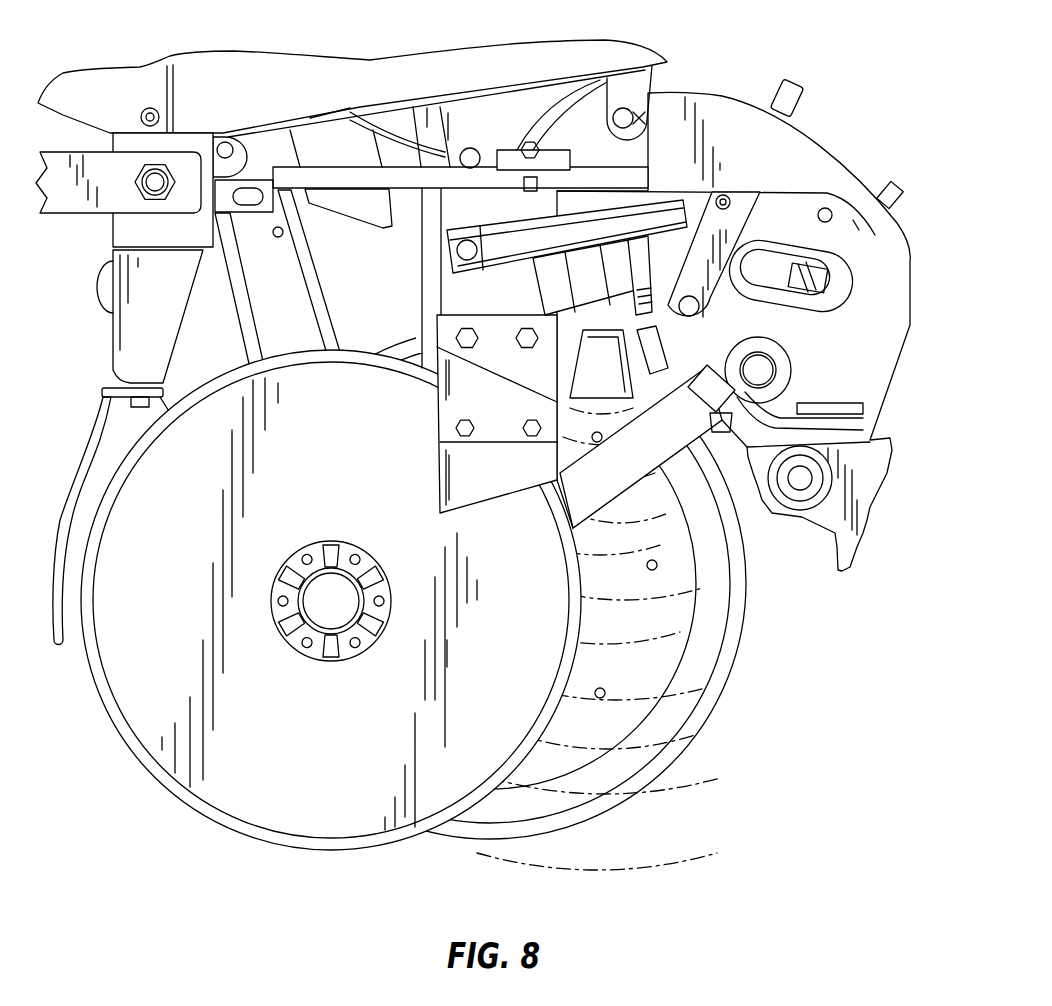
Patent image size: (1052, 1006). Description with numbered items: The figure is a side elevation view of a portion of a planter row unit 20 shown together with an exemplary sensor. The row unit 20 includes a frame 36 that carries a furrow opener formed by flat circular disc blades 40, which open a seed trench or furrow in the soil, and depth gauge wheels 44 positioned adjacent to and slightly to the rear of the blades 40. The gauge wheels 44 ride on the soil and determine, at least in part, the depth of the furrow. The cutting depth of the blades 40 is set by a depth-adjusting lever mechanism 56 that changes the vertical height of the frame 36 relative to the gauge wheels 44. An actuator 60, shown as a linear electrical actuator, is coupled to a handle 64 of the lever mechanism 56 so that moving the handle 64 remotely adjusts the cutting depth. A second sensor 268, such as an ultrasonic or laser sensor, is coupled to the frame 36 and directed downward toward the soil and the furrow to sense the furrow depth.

The planter row unit 20 is at (870, 93).
The frame 36 is at (903, 363).
The flat circular disc blades 40 is at (243, 785).
The depth gauge wheels 44 is at (746, 607).
The depth-adjusting lever mechanism 56 is at (860, 258).
The actuator 60 is at (497, 282).
The handle 64 is at (778, 98).
The second sensor 268 is at (606, 364).